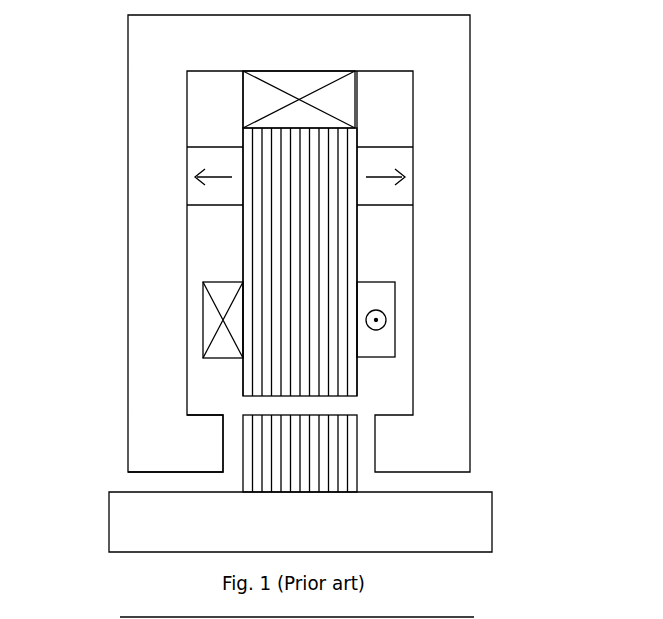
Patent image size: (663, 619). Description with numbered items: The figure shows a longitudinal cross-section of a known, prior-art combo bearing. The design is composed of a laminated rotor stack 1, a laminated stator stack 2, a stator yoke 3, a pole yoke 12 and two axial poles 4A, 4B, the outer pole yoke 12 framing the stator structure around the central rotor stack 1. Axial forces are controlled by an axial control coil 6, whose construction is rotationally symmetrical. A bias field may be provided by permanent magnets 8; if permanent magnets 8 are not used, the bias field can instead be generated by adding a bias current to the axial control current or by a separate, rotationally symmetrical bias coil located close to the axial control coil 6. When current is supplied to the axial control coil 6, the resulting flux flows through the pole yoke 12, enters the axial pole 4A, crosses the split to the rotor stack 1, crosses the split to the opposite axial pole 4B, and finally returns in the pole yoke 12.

The pole yoke 12 is at (340, 43).
The axial control coil 6 is at (340, 100).
The stator yoke 3 is at (325, 160).
The permanent magnets 8 is at (198, 157).
The laminated stator stack 2 is at (213, 250).
The laminated rotor stack 1 is at (234, 446).
The axial pole 4A is at (199, 477).
The axial pole 4B is at (406, 476).